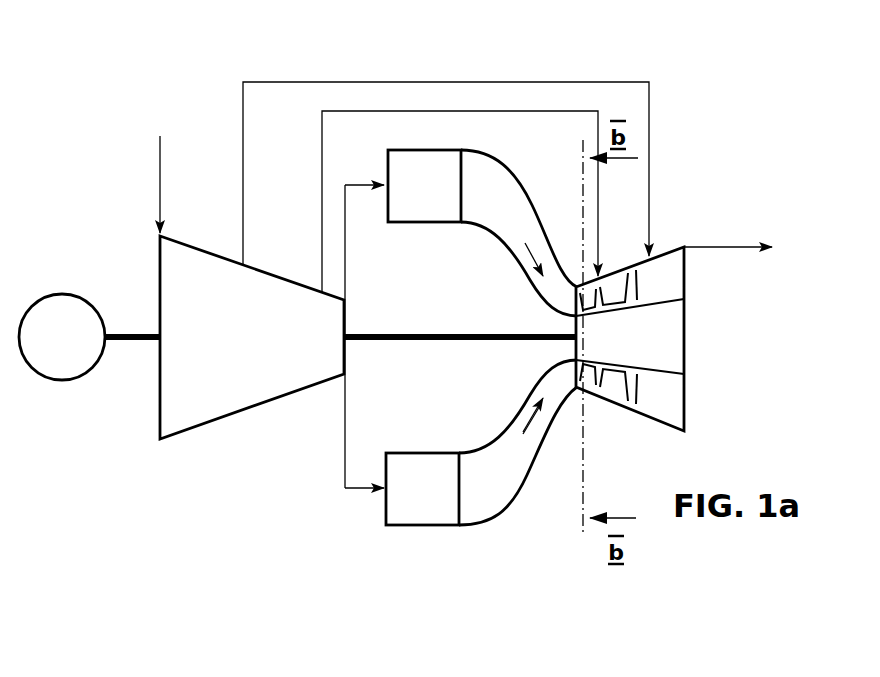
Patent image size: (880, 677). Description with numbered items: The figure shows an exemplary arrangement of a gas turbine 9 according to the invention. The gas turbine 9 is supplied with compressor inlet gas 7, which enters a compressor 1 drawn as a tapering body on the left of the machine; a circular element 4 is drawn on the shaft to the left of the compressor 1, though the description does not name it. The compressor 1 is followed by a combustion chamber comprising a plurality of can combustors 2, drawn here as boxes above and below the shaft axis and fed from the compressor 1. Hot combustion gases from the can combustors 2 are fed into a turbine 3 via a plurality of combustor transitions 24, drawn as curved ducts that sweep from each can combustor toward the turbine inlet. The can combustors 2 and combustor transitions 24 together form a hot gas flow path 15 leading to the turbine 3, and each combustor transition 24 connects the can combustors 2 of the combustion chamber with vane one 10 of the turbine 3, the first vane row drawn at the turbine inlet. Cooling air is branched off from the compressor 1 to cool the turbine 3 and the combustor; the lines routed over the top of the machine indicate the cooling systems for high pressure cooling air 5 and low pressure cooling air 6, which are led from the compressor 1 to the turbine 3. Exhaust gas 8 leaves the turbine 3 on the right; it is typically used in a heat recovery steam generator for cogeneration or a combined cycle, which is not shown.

The compressor 1 is at (252, 350).
The can combustors 2 is at (431, 500).
The turbine 3 is at (639, 350).
The generator 4 is at (71, 350).
The high pressure cooling air 5 is at (450, 82).
The low pressure cooling air 6 is at (508, 110).
The compressor inlet gas 7 is at (157, 165).
The exhaust gas 8 is at (740, 250).
The gas turbine 9 is at (308, 452).
The vane one 10 is at (588, 380).
The hot gas flow path 15 is at (534, 420).
The combustor transitions 24 is at (506, 460).